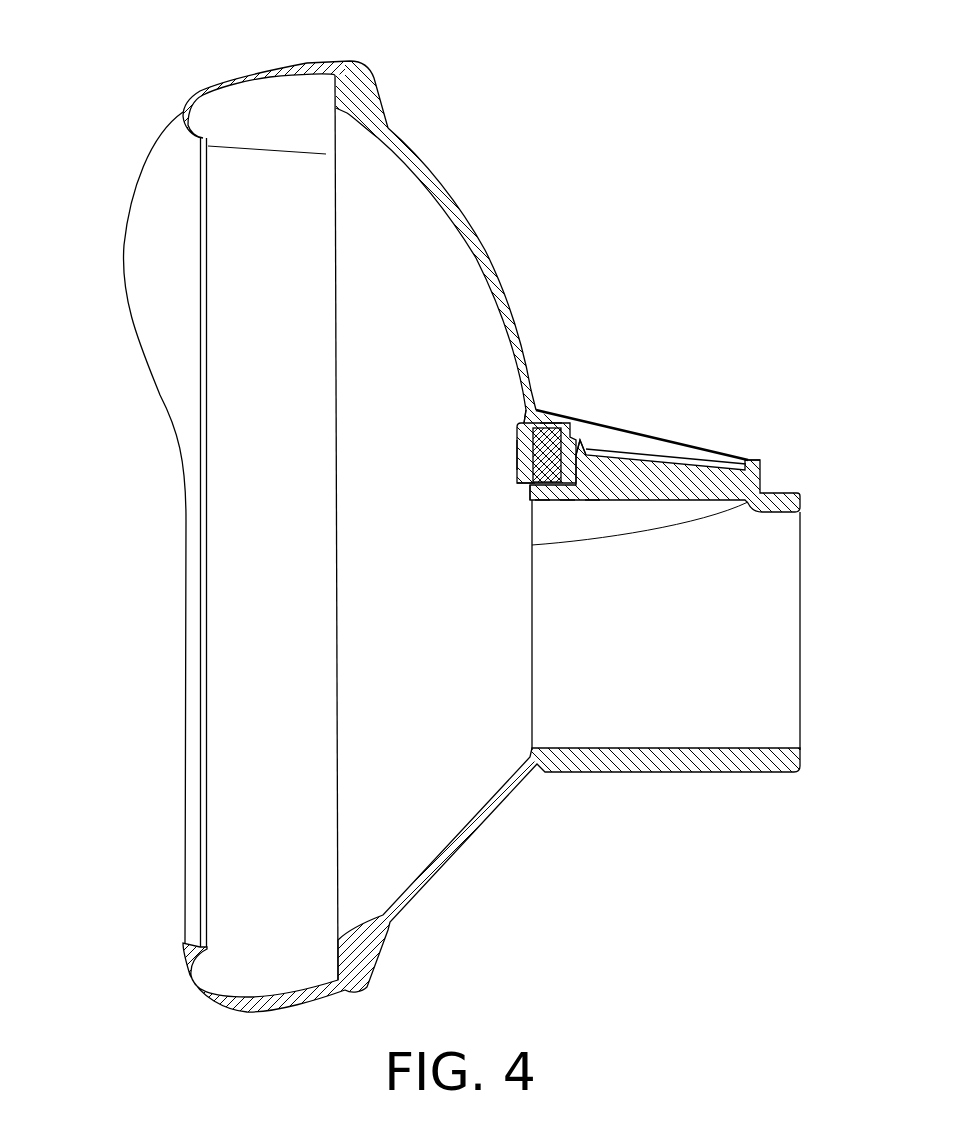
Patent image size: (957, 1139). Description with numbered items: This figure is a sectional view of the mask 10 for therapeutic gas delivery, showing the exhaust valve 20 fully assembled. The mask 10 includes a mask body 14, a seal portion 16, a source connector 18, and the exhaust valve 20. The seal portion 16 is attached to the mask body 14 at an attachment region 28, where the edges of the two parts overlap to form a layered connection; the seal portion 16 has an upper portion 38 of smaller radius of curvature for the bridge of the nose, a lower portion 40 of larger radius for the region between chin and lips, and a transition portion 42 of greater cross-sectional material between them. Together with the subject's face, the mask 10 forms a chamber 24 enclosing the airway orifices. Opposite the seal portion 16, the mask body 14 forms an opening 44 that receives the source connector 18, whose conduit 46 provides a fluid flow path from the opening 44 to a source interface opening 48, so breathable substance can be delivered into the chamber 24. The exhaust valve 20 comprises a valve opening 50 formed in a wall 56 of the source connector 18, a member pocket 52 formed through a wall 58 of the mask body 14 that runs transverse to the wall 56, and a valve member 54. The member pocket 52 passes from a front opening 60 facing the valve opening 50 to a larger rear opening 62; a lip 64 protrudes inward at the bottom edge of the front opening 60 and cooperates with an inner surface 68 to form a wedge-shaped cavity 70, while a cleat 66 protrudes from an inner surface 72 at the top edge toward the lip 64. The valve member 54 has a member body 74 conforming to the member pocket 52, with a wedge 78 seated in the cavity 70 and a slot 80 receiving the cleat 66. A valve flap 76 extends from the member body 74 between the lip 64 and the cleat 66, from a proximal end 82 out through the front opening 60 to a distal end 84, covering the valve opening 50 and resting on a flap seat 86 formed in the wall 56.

The mask 10 is at (727, 206).
The mask body 14 is at (480, 220).
The seal portion 16 is at (270, 108).
The source connector 18 is at (705, 768).
The exhaust valve 20 is at (734, 340).
The chamber 24 is at (136, 450).
The attachment region 28 is at (392, 128).
The upper portion 38 is at (140, 262).
The lower portion 40 is at (235, 914).
The transition portion 42 is at (218, 555).
The opening 44 is at (531, 655).
The conduit 46 is at (667, 649).
The source interface opening 48 is at (788, 627).
The valve opening 50 is at (636, 480).
The member pocket 52 is at (517, 432).
The valve member 54 is at (518, 457).
The wall 56 is at (790, 493).
The wall 58 is at (513, 296).
The front opening 60 is at (592, 456).
The rear opening 62 is at (520, 481).
The lip 64 is at (620, 500).
The cleat 66 is at (566, 440).
The inner surface 68 is at (541, 500).
The cavity 70 is at (566, 500).
The inner surface 72 is at (555, 418).
The member body 74 is at (528, 497).
The valve flap 76 is at (670, 466).
The wedge 78 is at (592, 500).
The slot 80 is at (520, 418).
The proximal end 82 is at (606, 456).
The distal end 84 is at (712, 462).
The flap seat 86 is at (742, 462).